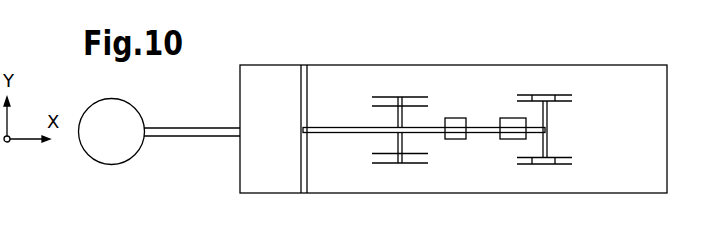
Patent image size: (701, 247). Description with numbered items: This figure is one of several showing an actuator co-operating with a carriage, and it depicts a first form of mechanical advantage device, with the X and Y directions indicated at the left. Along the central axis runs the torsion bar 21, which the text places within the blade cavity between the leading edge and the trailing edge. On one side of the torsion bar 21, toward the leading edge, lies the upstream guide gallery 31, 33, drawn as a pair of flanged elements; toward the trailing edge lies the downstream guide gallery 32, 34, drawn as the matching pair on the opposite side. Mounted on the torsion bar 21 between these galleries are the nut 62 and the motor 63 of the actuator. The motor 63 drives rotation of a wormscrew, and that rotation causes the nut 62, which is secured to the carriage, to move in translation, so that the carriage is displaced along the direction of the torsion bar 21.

The torsion bar 21 is at (472, 133).
The upstream guide gallery 31 is at (418, 97).
The downstream guide gallery 32 is at (413, 163).
The upstream guide gallery 33 is at (563, 95).
The downstream guide gallery 34 is at (561, 164).
The nut 62 is at (452, 118).
The motor 63 is at (502, 118).